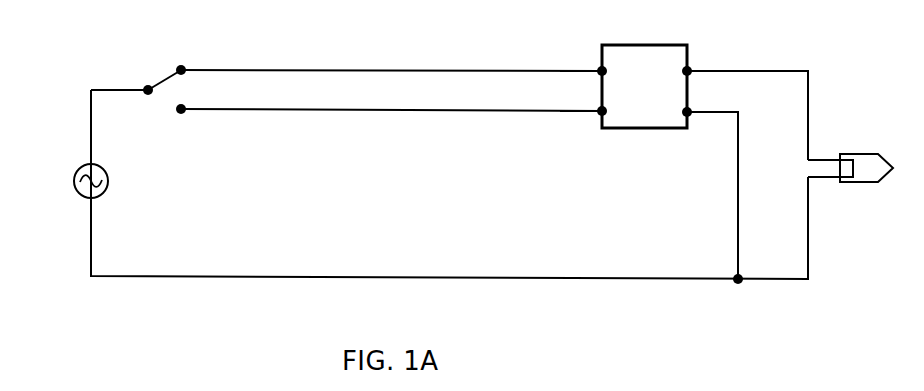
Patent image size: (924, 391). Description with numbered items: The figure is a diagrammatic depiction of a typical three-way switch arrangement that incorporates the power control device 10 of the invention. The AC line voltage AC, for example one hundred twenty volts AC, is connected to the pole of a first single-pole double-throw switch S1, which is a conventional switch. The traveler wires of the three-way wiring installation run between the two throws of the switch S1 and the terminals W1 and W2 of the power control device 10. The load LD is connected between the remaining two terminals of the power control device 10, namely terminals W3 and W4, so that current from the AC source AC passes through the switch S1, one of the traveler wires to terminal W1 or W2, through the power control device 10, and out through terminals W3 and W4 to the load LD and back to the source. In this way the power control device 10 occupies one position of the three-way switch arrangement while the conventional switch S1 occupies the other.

The power control device 10 is at (644, 86).
The first SPDT switch S1 is at (166, 74).
The AC line voltage AC is at (74, 172).
The terminal W1 is at (578, 61).
The terminal W2 is at (578, 101).
The terminal W3 is at (713, 61).
The terminal W4 is at (712, 102).
The load LD is at (852, 180).